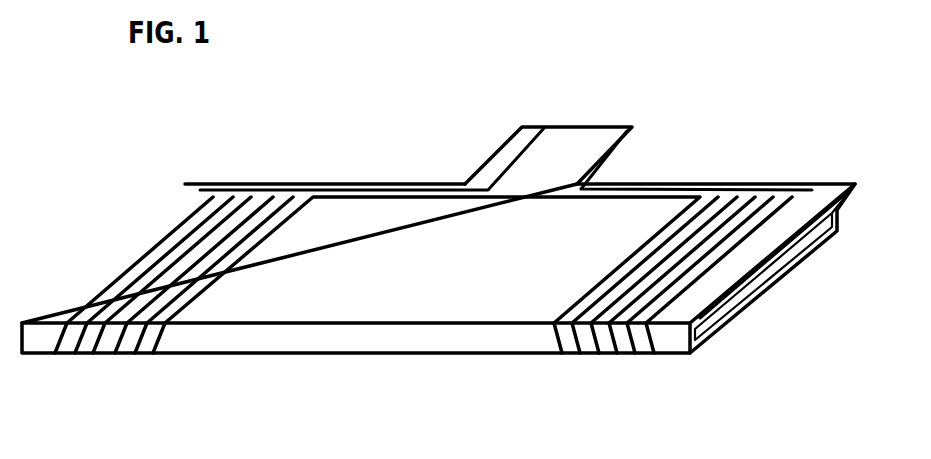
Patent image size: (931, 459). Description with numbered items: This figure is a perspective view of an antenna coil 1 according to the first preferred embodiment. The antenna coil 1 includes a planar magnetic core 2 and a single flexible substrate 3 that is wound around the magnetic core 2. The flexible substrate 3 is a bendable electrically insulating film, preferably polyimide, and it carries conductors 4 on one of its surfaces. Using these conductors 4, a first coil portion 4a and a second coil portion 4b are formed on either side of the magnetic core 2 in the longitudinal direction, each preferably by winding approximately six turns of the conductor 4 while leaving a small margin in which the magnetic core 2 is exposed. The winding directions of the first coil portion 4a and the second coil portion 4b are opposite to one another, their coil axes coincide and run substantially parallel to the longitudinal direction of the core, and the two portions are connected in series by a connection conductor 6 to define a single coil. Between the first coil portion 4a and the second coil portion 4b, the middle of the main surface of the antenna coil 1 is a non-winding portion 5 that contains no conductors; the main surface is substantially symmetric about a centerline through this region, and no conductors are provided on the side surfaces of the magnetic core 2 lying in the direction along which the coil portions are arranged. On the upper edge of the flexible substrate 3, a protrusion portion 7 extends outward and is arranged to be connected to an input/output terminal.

The antenna coil 1 is at (96, 103).
The magnetic core 2 is at (800, 243).
The flexible substrate 3 is at (707, 338).
The conductors 4 is at (421, 283).
The first coil portion 4a is at (155, 365).
The second coil portion 4b is at (662, 365).
The non-winding portion 5 is at (452, 282).
The connection conductor 6 is at (373, 197).
The protrusion portion 7 is at (566, 127).